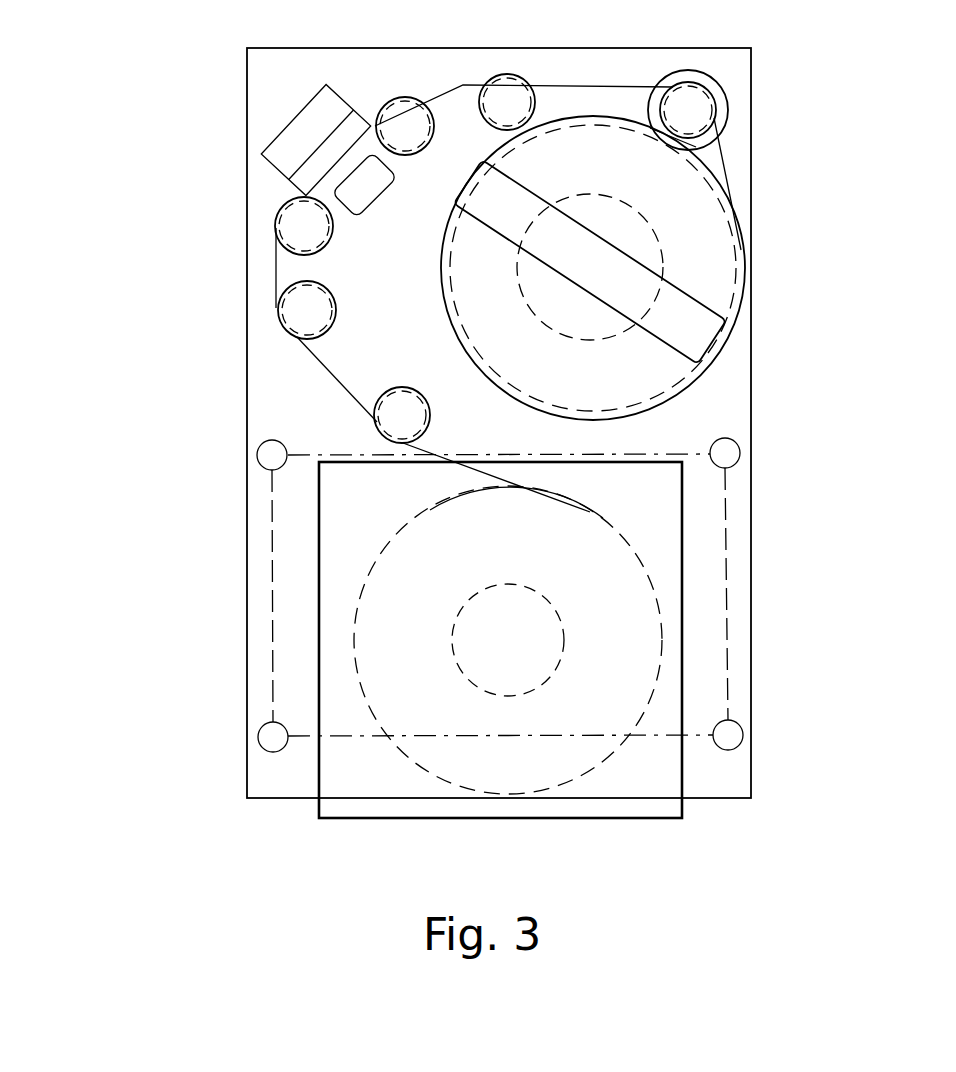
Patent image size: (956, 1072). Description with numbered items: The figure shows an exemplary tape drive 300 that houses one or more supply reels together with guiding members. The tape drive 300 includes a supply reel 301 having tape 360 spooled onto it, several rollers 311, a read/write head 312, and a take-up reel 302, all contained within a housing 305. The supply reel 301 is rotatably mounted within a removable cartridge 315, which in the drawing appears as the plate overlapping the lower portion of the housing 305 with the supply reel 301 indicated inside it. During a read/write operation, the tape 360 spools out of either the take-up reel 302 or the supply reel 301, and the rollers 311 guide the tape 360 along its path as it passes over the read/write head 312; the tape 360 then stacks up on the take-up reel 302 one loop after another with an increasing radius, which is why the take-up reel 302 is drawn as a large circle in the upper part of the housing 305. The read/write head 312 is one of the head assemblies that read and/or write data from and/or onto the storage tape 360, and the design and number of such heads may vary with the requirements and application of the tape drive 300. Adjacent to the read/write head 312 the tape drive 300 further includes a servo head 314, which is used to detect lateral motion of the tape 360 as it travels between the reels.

The tape drive 300 is at (171, 764).
The supply reel 301 is at (363, 587).
The take-up reel 302 is at (700, 232).
The housing 305 is at (753, 367).
The rollers 311 is at (413, 115).
The read/write head 312 is at (297, 127).
The servo head 314 is at (357, 192).
The removable cartridge 315 is at (682, 632).
The tape 360 is at (335, 373).